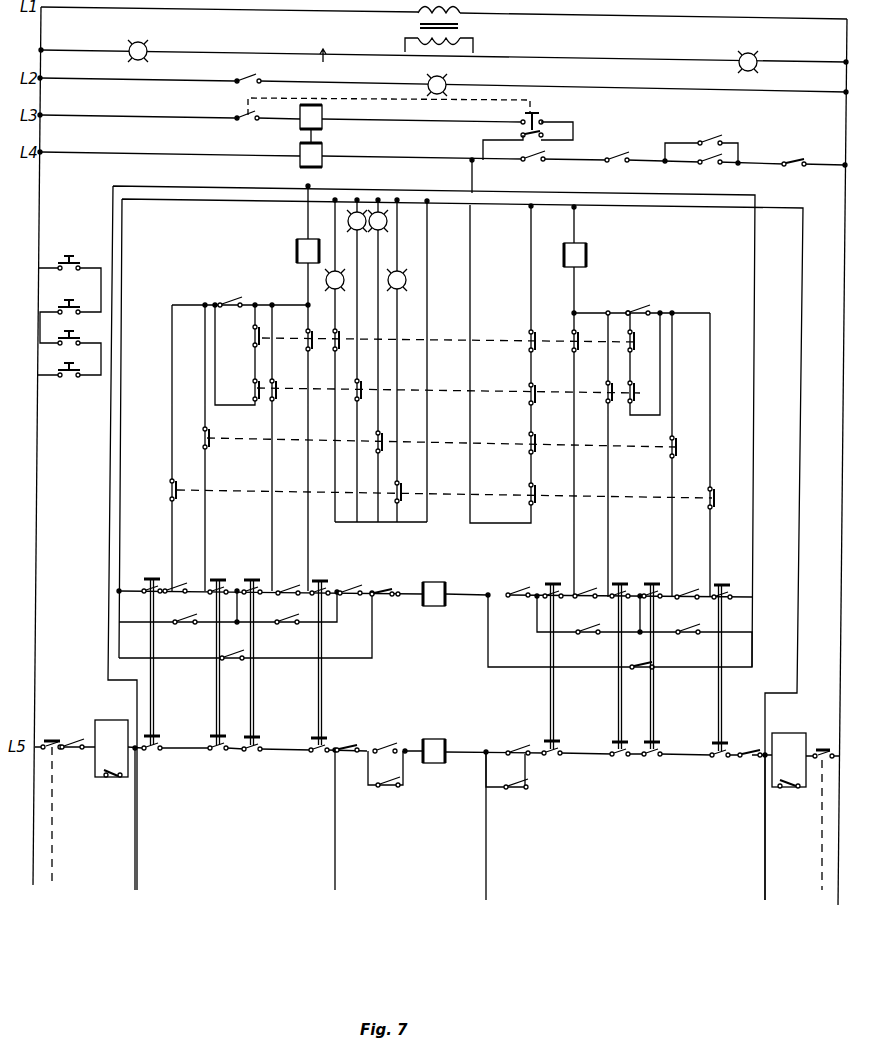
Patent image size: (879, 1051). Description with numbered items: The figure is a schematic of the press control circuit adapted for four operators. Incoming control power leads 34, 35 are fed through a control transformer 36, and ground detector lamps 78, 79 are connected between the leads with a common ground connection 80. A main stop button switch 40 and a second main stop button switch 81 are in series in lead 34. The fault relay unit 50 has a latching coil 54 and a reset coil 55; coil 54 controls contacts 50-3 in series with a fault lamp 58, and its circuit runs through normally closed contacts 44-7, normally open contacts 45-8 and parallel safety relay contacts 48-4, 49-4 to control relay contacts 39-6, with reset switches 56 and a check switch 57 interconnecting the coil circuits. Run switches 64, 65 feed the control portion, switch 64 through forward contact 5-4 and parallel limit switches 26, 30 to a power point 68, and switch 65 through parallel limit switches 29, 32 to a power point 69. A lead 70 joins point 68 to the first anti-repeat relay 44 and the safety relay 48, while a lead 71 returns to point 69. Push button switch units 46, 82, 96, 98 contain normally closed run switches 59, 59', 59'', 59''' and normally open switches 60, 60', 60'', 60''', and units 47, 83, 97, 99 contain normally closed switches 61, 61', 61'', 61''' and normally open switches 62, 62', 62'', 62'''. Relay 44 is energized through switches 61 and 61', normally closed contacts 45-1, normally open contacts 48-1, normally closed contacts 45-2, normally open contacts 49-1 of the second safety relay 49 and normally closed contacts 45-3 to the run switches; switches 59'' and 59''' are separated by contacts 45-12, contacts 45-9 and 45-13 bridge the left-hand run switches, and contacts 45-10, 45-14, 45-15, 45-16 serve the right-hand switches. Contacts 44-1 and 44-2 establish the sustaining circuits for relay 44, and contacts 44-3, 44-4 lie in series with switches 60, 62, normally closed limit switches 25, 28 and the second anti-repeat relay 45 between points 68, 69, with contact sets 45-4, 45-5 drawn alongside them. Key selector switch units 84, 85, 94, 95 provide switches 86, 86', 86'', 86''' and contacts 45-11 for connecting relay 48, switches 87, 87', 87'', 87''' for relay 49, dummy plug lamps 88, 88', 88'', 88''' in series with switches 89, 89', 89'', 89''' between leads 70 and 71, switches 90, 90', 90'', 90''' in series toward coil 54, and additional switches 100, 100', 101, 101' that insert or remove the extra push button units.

The control transformer 36 is at (406, 25).
The ground detector lamp 78 is at (146, 45).
The ground detector lamp 79 is at (756, 56).
The common ground connection 80 is at (318, 58).
The contacts 50-3 is at (236, 76).
The fault lamp 58 is at (446, 80).
The reset switches 56 is at (232, 109).
The trip or reset coil 55 is at (322, 112).
The fault relay unit 50 is at (314, 136).
The trigger or latching coil 54 is at (300, 160).
The check switch 57 is at (520, 134).
The normally closed contacts of anti-repeat relay 44-7 is at (528, 163).
The normally open contacts of second anti-repeat relay 45-8 is at (622, 152).
The safety relay contacts 48-4 is at (708, 138).
The safety relay contacts 49-4 is at (706, 166).
The control relay contacts 39-6 is at (803, 160).
The second main stop button switch 81 is at (58, 344).
The main stop button switch 40 is at (64, 382).
The lead 70 is at (113, 214).
The lead 71 is at (803, 270).
The incoming control power lead 34 is at (40, 199).
The incoming control power lead 35 is at (845, 204).
The safety relay 48 is at (297, 246).
The second safety relay 49 is at (587, 248).
The dummy plug lamp 88 is at (417, 272).
The dummy plug lamp 88' is at (391, 205).
The dummy plug lamp 88'' is at (358, 205).
The dummy plug lamp 88''' is at (311, 283).
The normally open contacts of anti-repeat relay 45-11 is at (236, 302).
The additional switch 100 is at (237, 336).
The additional switch 100' is at (236, 390).
The first switch 86 is at (157, 490).
The first switch 86' is at (191, 444).
The first switch 86'' is at (253, 398).
The first switch 86''' is at (295, 352).
The third switch 89 is at (421, 477).
The third switch 89' is at (399, 429).
The third switch 89'' is at (351, 398).
The third switch 89''' is at (327, 355).
The selector switch unit 94 is at (494, 340).
The selector switch unit 95 is at (494, 394).
The key operated selector switch unit 85 is at (494, 441).
The key operated selector switch unit 84 is at (494, 493).
The fourth switch 90 is at (546, 487).
The fourth switch 90' is at (548, 437).
The fourth switch 90'' is at (550, 387).
The fourth switch 90''' is at (552, 329).
The second switch 87 is at (695, 506).
The second switch 87' is at (653, 456).
The second switch 87'' is at (594, 401).
The second switch 87''' is at (592, 353).
The additional switch 101 is at (615, 320).
The additional switch 101' is at (644, 405).
The additional contacts of anti-repeat relay 45-14 is at (652, 314).
The normally closed switch 59 is at (144, 572).
The normally closed switch 59' is at (221, 573).
The normally closed switch 59'' is at (256, 577).
The normally closed switch 59''' is at (332, 573).
The normally closed contacts of second anti-repeat relay 45-3 is at (182, 586).
The normally closed contacts of anti-repeat relay 45-12 is at (282, 586).
The normally open contacts of second safety relay 49-1 is at (358, 582).
The first anti-repeat relay 44 is at (438, 580).
The normally closed contacts of second anti-repeat relay 45-2 is at (390, 596).
The normally open contacts of relay 45-9 is at (188, 624).
The normally open contacts of relay 45-13 is at (294, 624).
The first set of normally open contacts 44-1 is at (242, 664).
The normally open contacts of safety relay 48-1 is at (520, 600).
The normally closed switch 61 is at (723, 577).
The normally closed switch 61' is at (654, 577).
The normally closed switch 61'' is at (625, 577).
The normally closed switch 61''' is at (544, 577).
The additional contacts of anti-repeat relay 45-15 is at (592, 586).
The normally closed contacts of second anti-repeat relay 45-1 is at (686, 602).
The additional contacts of anti-repeat relay 45-16 is at (590, 634).
The tenth set of contacts 45-10 is at (686, 634).
The contacts of anti-repeat relay 44-2 is at (646, 670).
The push button switch unit 46 is at (156, 694).
The rear run push button switch unit 82 is at (216, 716).
The push button run switch unit 96 is at (254, 710).
The push button run switch unit 98 is at (322, 708).
The push button run switch unit 99 is at (554, 698).
The push button run switch unit 97 is at (618, 716).
The rear run push button switch unit 83 is at (656, 706).
The push button switch unit 47 is at (726, 690).
The run switch 64 is at (68, 734).
The forward contact 5-4 is at (80, 754).
The limit switch 26 is at (114, 720).
The limit switch 30 is at (116, 778).
The common control circuit power point 68 is at (142, 760).
The normally open switch 60 is at (162, 757).
The normally open switch 60' is at (212, 761).
The normally open switch 60'' is at (253, 761).
The normally open switch 60''' is at (310, 762).
The normally closed limit switch 25 is at (354, 746).
The third set of normally open contacts 44-3 is at (388, 746).
The switch contact 45-4 is at (390, 788).
The second anti-repeat relay 45 is at (442, 740).
The fourth set of normally open contacts 44-4 is at (526, 748).
The switch contact 45-5 is at (508, 790).
The normally open switch 62 is at (711, 766).
The normally open switch 62' is at (651, 768).
The normally open switch 62'' is at (609, 768).
The normally open switch 62''' is at (560, 763).
The normally closed limit switch 28 is at (754, 750).
The common control circuit power point 69 is at (762, 760).
The limit switch 32 is at (792, 734).
The limit switch 29 is at (788, 788).
The run switch 65 is at (832, 748).